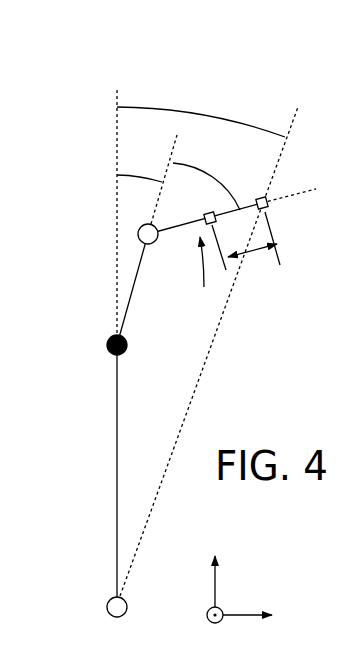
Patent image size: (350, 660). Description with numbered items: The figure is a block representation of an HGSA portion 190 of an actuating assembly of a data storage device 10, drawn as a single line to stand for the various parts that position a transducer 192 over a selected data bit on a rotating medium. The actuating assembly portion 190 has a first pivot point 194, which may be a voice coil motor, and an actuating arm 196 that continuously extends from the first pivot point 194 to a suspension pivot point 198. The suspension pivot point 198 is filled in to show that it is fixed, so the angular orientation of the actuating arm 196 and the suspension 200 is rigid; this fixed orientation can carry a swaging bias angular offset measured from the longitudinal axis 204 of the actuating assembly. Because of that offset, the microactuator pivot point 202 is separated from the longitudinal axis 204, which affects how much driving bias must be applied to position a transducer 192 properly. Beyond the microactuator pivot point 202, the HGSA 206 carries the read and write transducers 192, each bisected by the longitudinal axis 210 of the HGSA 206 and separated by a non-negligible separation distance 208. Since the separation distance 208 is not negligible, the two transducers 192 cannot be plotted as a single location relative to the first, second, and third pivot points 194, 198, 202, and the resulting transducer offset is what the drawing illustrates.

The robotic system 10 is at (344, 57).
The HGSA portion 190 is at (132, 66).
The transducer 192 is at (204, 214).
The first pivot point 194 is at (108, 601).
The actuating arm 196 is at (117, 445).
The suspension pivot point 198 is at (108, 340).
The suspension 200 is at (131, 296).
The microactuator pivot point 202 is at (154, 242).
The longitudinal axis of the actuating assembly 204 is at (116, 232).
The HGSA 206 is at (202, 275).
The separation distance 208 is at (246, 246).
The longitudinal axis of the HGSA 210 is at (309, 184).